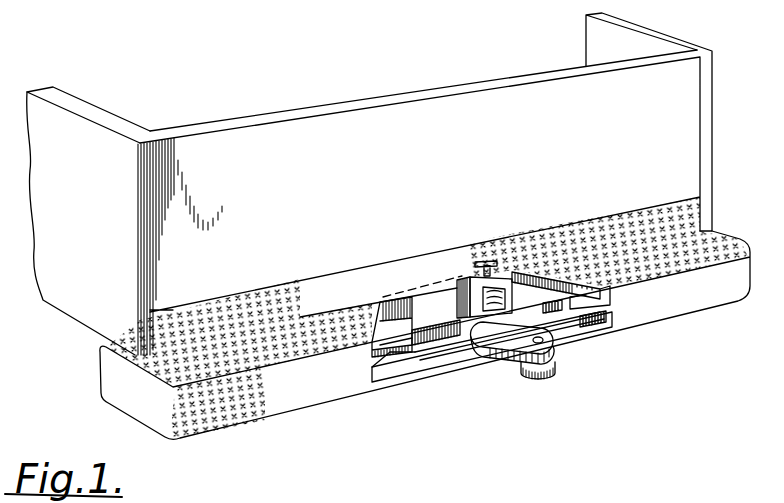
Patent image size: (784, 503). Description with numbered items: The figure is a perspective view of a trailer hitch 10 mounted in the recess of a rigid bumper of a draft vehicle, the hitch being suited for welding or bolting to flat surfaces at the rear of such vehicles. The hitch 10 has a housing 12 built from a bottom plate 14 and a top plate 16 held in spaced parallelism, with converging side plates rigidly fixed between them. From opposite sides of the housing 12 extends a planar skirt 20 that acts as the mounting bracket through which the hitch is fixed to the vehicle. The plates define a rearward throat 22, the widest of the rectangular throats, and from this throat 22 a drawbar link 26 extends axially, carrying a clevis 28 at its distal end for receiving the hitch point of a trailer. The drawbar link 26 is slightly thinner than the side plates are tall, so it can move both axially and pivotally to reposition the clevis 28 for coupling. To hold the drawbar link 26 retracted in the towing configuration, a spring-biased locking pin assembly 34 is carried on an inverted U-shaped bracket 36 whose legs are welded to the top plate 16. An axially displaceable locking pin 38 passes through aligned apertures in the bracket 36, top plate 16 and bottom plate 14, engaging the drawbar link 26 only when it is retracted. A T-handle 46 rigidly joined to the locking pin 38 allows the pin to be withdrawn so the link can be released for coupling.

The trailer hitch 10 is at (617, 305).
The housing 12 is at (418, 364).
The bottom plate 14 is at (461, 343).
The top plate 16 is at (431, 311).
The skirt 20 is at (372, 345).
The throat 22 is at (543, 315).
The drawbar link 26 is at (498, 323).
The clevis 28 is at (547, 382).
The spring-biased locking pin assembly 34 is at (507, 279).
The bracket 36 is at (461, 288).
The locking pin 38 is at (480, 277).
The T-handle 46 is at (511, 272).